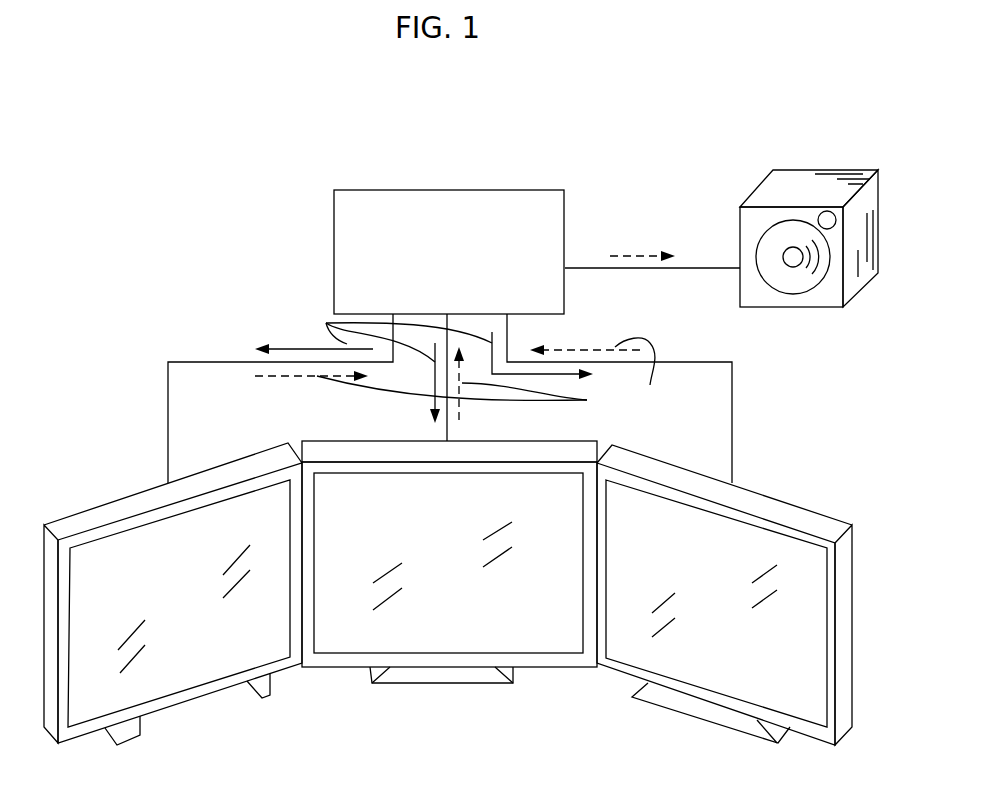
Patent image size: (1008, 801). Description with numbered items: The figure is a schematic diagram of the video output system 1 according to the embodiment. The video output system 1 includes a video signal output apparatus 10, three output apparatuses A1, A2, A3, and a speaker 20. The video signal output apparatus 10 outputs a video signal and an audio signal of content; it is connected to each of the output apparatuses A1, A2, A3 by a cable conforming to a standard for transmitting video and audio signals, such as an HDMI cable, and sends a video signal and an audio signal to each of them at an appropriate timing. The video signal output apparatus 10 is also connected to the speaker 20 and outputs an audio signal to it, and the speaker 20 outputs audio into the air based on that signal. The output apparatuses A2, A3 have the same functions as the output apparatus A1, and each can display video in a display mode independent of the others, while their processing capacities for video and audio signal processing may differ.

The video output system 1 is at (732, 105).
The video signal output apparatus 10 is at (520, 190).
The speaker 20 is at (813, 170).
The output apparatus A1 is at (87, 507).
The output apparatus A2 is at (487, 438).
The output apparatus A3 is at (780, 498).